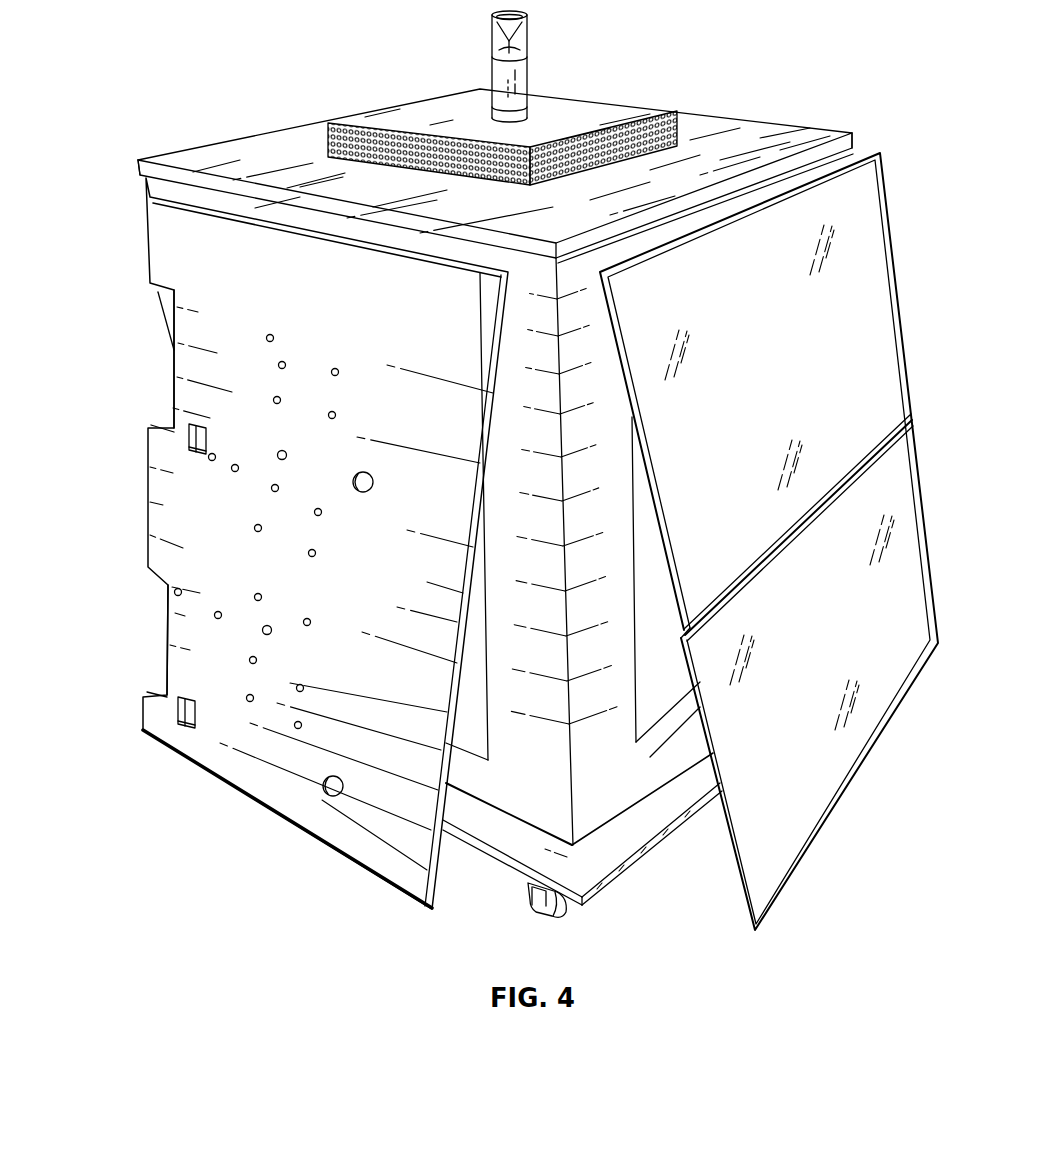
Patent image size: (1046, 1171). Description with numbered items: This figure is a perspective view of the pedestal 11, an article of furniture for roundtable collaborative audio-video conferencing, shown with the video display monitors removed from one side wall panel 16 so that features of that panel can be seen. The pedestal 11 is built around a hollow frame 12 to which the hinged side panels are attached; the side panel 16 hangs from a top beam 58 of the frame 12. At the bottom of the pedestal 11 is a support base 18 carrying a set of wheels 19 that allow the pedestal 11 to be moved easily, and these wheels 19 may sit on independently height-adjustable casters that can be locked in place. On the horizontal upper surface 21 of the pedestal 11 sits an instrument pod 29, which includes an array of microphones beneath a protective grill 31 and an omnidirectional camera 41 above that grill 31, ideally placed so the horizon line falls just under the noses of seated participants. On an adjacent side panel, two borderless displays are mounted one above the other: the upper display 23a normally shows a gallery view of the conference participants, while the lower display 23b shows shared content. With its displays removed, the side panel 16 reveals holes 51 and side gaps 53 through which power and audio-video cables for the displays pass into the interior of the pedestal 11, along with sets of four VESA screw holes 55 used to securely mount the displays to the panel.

The pedestal 11 is at (163, 86).
The frame 12 is at (623, 527).
The side wall panel 16 is at (282, 543).
The support base 18 is at (612, 839).
The wheels 19 is at (548, 912).
The horizontal upper surface 21 is at (290, 145).
The upper display 23a is at (786, 385).
The lower display 23b is at (841, 639).
The instrument pod 29 is at (463, 61).
The protective grill 31 is at (376, 120).
The omnidirectional camera 41 is at (478, 68).
The holes 51 is at (353, 482).
The side gaps 53 is at (170, 383).
The VESA screw holes 55 is at (333, 368).
The top beam 58 is at (140, 162).